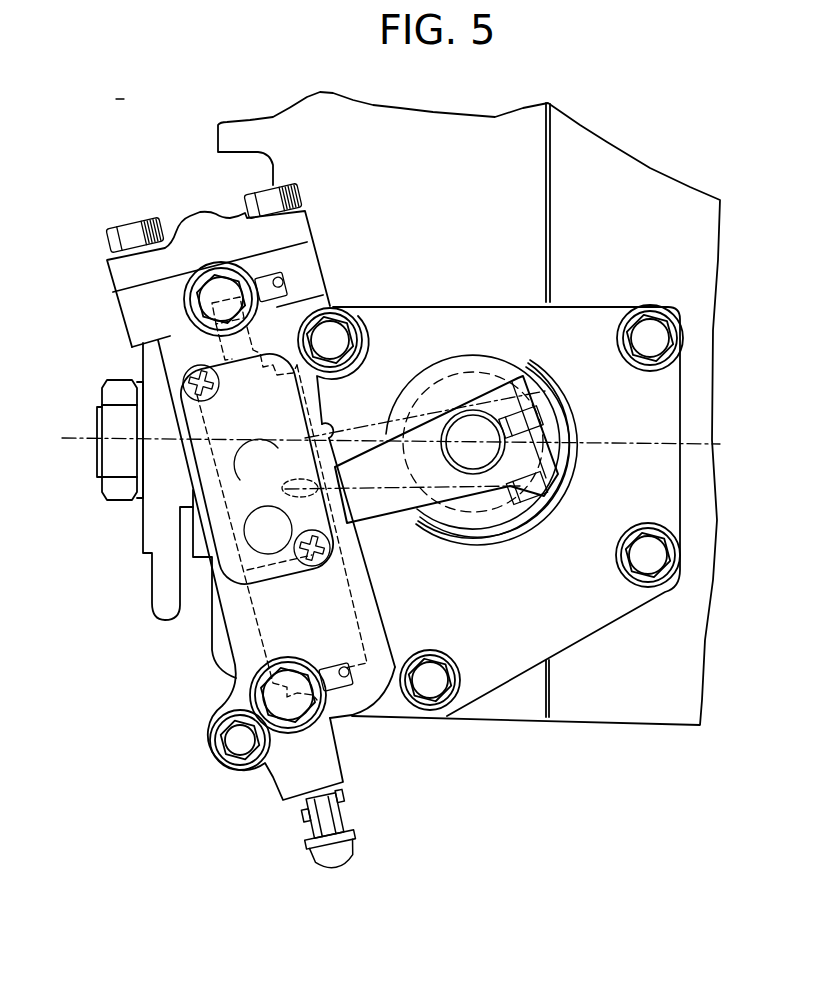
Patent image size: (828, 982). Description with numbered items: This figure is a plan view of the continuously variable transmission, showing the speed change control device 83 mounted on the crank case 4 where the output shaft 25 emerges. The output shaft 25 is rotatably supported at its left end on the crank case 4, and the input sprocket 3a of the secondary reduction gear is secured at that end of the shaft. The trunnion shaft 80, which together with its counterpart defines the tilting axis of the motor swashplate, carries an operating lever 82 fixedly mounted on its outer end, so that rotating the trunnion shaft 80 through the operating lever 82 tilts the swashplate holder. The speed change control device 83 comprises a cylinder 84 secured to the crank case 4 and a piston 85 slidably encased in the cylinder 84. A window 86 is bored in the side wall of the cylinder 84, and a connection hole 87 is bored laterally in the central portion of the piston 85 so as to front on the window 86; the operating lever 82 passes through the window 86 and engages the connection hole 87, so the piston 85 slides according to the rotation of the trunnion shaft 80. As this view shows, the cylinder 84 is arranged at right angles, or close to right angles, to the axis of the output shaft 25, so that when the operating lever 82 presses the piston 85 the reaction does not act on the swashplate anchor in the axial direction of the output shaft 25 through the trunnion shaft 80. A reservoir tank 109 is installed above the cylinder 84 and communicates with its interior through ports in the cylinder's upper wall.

The crank case 4 is at (616, 119).
The speed change control device 83 is at (345, 290).
The cylinder 84 is at (382, 638).
The piston 85 is at (353, 607).
The input sprocket 3a is at (165, 620).
The output shaft 25 is at (97, 423).
The reservoir tank 109 is at (285, 585).
The connection hole 87 is at (250, 492).
The trunnion shaft 80 is at (472, 428).
The operating lever 82 is at (394, 517).
The window 86 is at (336, 428).